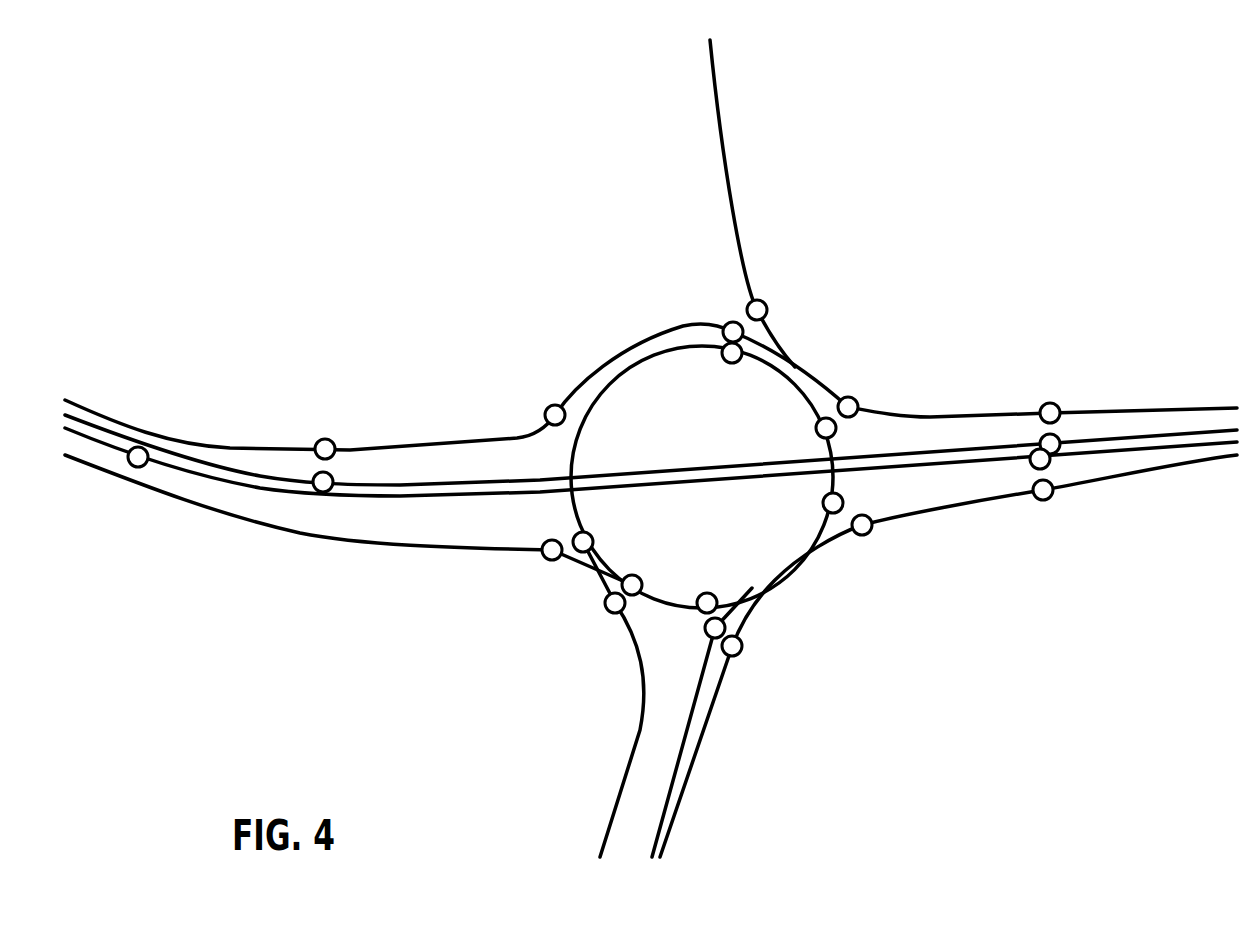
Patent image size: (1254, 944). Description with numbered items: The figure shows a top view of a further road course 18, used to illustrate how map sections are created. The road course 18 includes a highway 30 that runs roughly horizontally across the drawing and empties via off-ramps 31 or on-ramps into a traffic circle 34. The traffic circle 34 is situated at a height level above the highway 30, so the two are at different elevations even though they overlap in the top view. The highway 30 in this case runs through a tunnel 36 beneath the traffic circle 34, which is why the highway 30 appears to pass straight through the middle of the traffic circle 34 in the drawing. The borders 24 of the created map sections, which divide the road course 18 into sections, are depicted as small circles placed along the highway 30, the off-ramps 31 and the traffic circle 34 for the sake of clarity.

The road course 18 is at (136, 208).
The borders of created map sections 24 is at (134, 463).
The highway 30 is at (990, 398).
The off-ramps 31 is at (388, 445).
The traffic circle 34 is at (660, 306).
The tunnel 36 is at (647, 470).